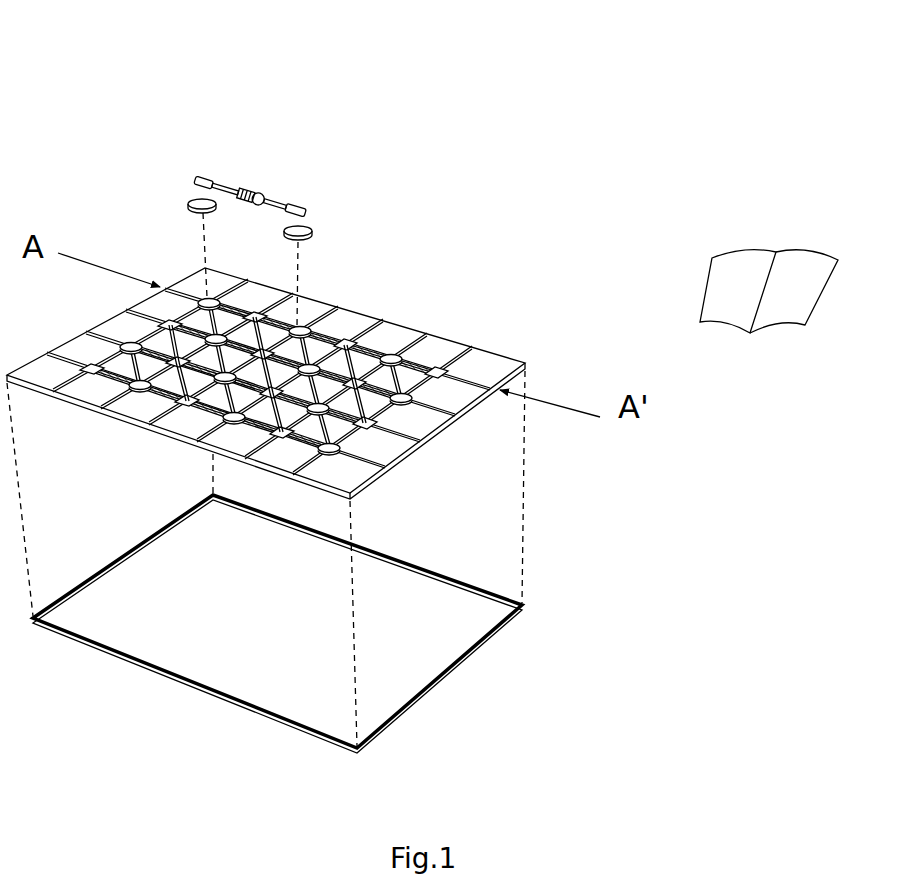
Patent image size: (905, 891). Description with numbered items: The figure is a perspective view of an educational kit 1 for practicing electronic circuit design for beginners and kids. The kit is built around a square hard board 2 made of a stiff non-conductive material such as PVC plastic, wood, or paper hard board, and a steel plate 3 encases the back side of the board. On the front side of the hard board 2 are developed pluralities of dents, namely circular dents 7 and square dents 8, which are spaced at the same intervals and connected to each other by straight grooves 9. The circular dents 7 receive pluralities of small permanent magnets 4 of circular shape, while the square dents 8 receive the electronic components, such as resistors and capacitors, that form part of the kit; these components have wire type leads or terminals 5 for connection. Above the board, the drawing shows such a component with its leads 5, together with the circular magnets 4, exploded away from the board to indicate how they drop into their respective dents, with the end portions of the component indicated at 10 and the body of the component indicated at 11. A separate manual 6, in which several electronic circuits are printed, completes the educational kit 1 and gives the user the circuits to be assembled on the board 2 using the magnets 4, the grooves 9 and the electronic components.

The educational kit 1 is at (345, 180).
The square hard board 2 is at (435, 345).
The steel plate 3 is at (462, 659).
The permanent magnets 4 is at (302, 230).
The wire type leads/terminals 5 is at (264, 150).
The manual 6 is at (778, 255).
The circular dents 7 is at (313, 358).
The square dents 8 is at (460, 368).
The straight grooves 9 is at (233, 298).
The rod end 10 is at (300, 207).
The coil 11 is at (248, 190).